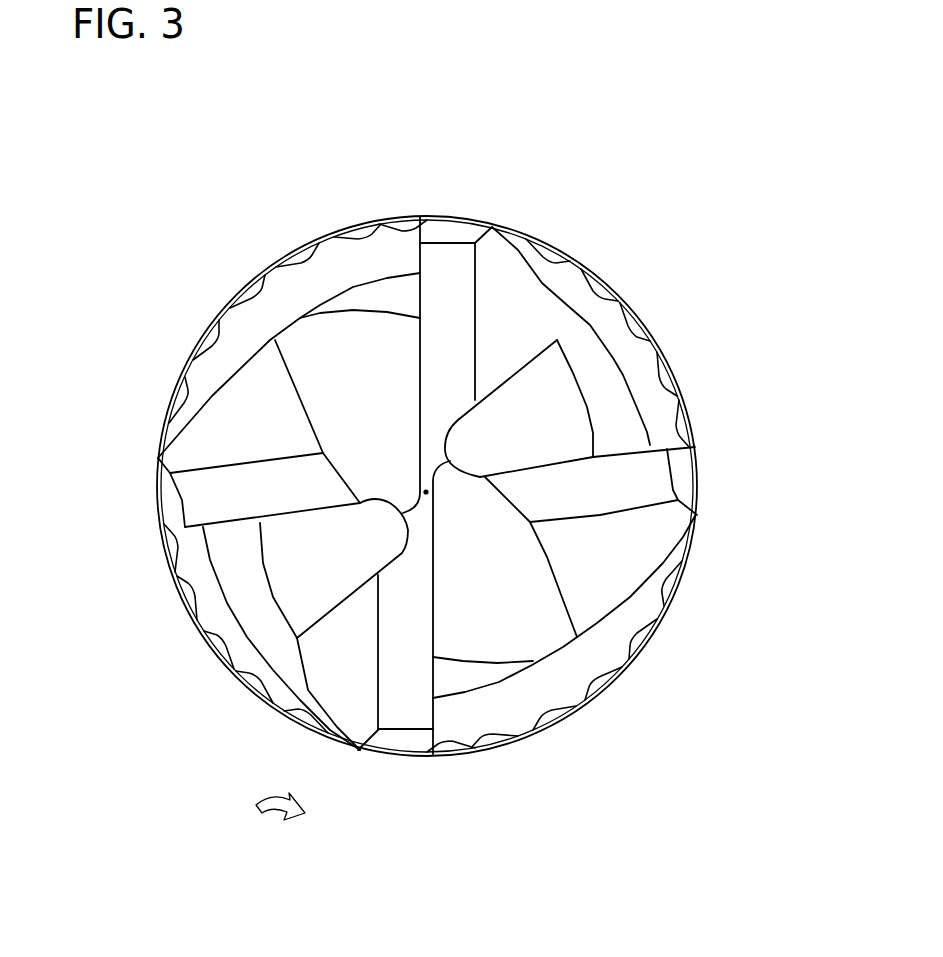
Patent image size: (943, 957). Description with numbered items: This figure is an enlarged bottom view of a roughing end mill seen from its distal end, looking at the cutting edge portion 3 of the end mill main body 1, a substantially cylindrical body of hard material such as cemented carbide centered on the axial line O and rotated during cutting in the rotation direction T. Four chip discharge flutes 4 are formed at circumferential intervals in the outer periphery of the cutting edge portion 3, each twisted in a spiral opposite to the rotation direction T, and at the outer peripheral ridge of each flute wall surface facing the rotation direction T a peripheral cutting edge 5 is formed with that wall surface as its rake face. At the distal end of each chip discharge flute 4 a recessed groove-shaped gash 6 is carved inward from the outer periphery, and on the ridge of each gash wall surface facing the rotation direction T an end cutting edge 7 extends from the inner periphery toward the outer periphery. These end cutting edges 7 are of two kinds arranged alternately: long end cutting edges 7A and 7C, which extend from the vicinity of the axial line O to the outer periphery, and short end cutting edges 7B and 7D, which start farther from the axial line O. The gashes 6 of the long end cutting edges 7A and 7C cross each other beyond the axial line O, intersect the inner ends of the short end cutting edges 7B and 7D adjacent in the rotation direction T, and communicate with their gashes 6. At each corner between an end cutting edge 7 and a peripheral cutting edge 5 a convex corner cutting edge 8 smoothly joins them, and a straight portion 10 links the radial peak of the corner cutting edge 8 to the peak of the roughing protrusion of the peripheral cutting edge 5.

The end mill main body 1 is at (190, 212).
The cutting edge portion 3 is at (427, 486).
The chip discharge flute 4 is at (230, 314).
The peripheral cutting edge 5 is at (424, 217).
The gash 6 is at (330, 353).
The end cutting edge 7 is at (422, 481).
The long end cutting edge 7A is at (417, 300).
The short end cutting edge 7B is at (217, 567).
The long end cutting edge 7C is at (437, 632).
The short end cutting edge 7D is at (623, 446).
The corner cutting edge 8 is at (420, 238).
The straight portion 10 is at (440, 485).
The axial line O is at (433, 495).
The rotation direction T is at (280, 825).